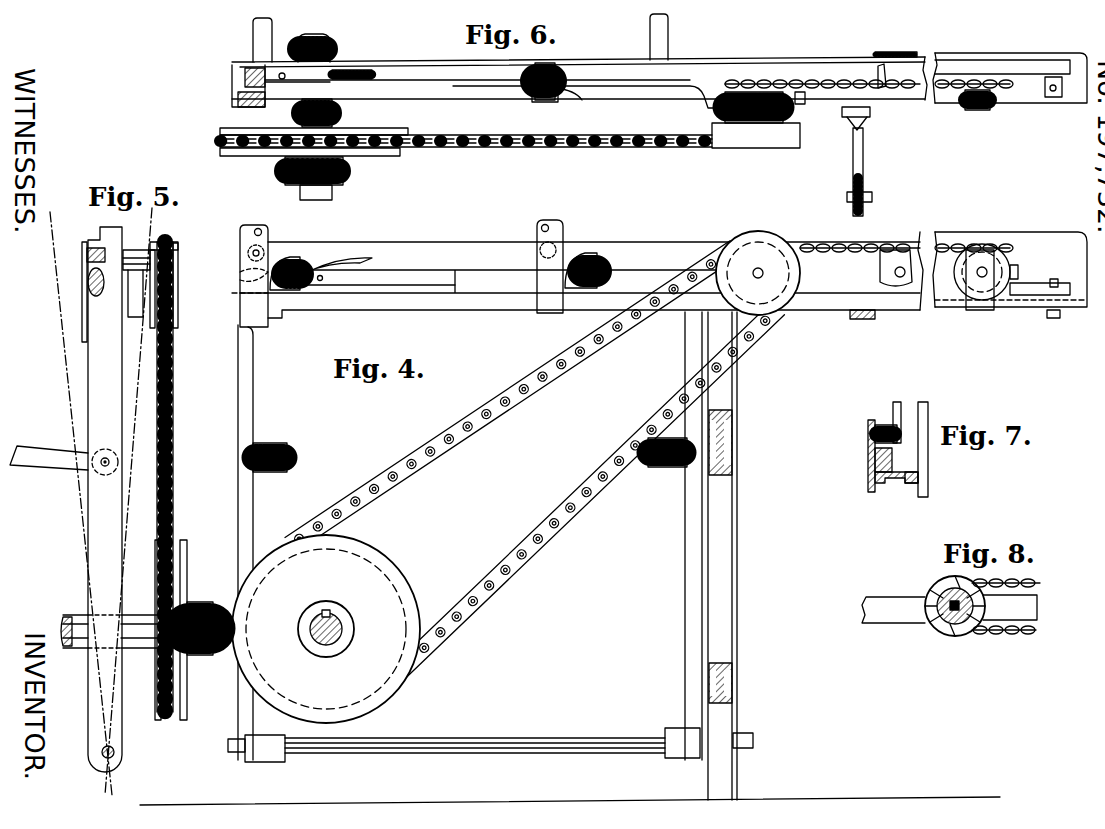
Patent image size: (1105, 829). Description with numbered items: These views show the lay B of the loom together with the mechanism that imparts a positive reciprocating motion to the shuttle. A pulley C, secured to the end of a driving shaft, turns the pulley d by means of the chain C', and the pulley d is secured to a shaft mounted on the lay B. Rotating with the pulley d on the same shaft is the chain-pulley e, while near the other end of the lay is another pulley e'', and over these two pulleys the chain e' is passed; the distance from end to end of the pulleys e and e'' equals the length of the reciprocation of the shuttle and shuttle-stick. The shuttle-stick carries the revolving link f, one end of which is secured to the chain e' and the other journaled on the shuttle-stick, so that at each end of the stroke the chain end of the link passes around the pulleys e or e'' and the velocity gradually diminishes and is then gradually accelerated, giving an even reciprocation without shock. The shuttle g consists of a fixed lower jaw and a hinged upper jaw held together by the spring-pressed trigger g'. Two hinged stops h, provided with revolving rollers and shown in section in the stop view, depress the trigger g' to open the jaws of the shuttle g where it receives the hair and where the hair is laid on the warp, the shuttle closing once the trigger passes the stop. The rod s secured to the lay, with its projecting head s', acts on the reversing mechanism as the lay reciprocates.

In FIG. 4, the lay B is at (577, 275).
In FIG. 5, the lay B is at (102, 499).
In FIG. 6, the pulley C is at (314, 117).
In FIG. 4, the pulley C is at (326, 629).
In FIG. 5, the pulley C is at (143, 630).
In FIG. 6, the chain C' is at (510, 120).
In FIG. 4, the chain C' is at (534, 459).
In FIG. 5, the chain C' is at (174, 477).
In FIG. 4, the pulley d is at (758, 273).
In FIG. 5, the pulley d is at (176, 274).
In FIG. 6, the chain-pulley e is at (822, 73).
In FIG. 4, the chain e' is at (906, 242).
In FIG. 8, the chain e' is at (1018, 603).
In FIG. 6, the pulley e'' is at (974, 81).
In FIG. 4, the pulley e'' is at (993, 274).
In FIG. 6, the revolving link f is at (896, 50).
In FIG. 8, the revolving link f is at (972, 581).
In FIG. 4, the shuttle g is at (362, 274).
In FIG. 4, the spring-pressed trigger g' is at (346, 257).
In FIG. 6, the hinged stop h is at (553, 100).
In FIG. 4, the hinged stop h is at (268, 233).
In FIG. 7, the hinged stop h is at (891, 421).
In FIG. 6, the rod s is at (861, 161).
In FIG. 6, the projecting head s' is at (870, 197).